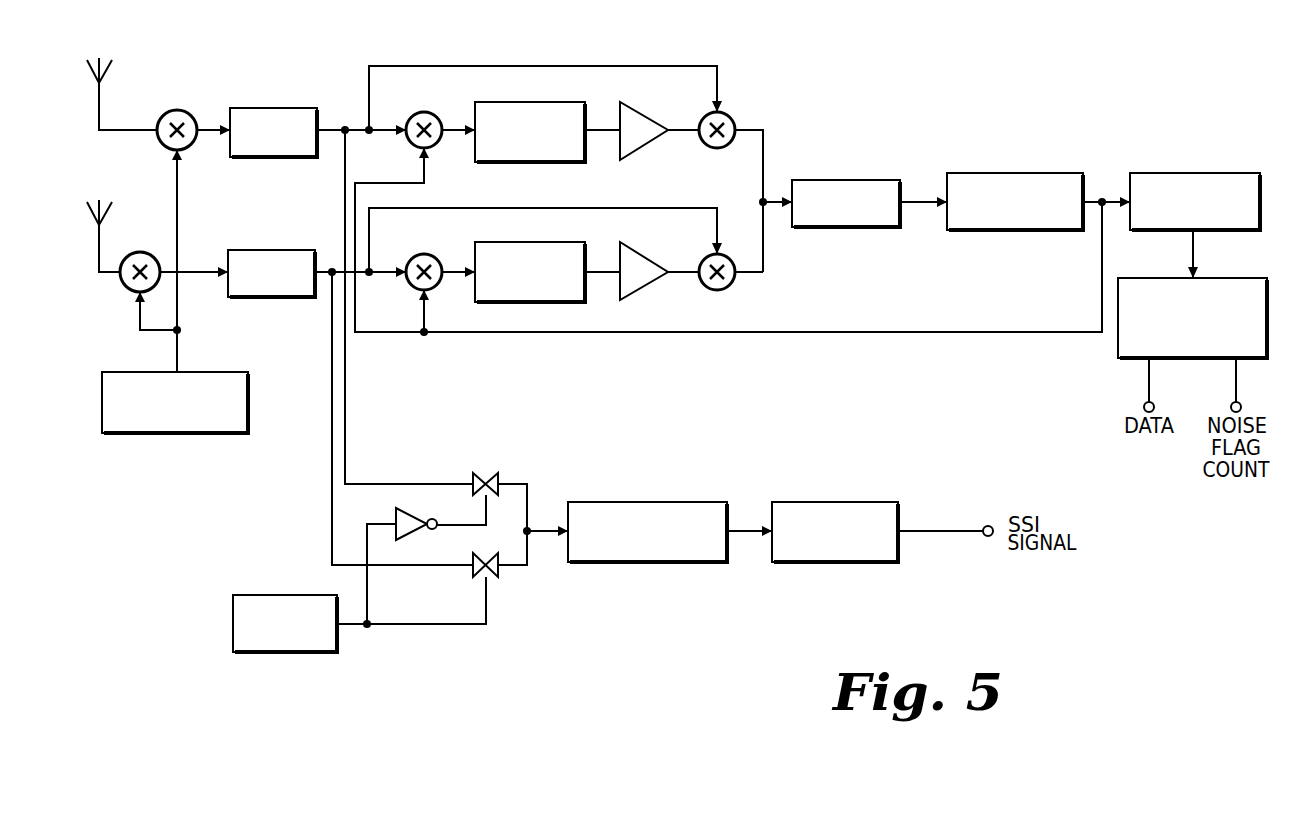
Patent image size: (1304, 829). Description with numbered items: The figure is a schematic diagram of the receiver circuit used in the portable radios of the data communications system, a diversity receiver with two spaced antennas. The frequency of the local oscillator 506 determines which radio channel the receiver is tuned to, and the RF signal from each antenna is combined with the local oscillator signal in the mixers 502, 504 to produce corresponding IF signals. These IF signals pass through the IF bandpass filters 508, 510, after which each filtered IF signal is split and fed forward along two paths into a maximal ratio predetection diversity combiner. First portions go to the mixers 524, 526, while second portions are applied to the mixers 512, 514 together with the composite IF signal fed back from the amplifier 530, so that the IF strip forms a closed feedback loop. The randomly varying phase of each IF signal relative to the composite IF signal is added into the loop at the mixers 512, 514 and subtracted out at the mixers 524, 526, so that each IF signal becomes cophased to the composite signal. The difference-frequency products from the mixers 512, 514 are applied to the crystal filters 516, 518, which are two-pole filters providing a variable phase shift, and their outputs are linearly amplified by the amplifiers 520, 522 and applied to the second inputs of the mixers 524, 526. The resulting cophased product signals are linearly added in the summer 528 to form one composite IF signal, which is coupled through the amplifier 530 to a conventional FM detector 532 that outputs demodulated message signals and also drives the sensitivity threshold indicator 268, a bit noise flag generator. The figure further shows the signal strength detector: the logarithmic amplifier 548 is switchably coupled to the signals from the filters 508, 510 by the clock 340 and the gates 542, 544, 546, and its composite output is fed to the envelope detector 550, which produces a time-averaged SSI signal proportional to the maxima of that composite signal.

The mixer 502 is at (160, 143).
The mixer 504 is at (140, 252).
The local oscillator 506 is at (233, 372).
The IF bandpass filter 508 is at (290, 108).
The IF bandpass filter 510 is at (273, 250).
The mixer 512 is at (424, 112).
The mixer 514 is at (424, 254).
The crystal filter 516 is at (535, 102).
The crystal filter 518 is at (535, 242).
The amplifier 520 is at (641, 91).
The amplifier 522 is at (642, 231).
The mixer 524 is at (733, 118).
The mixer 526 is at (702, 287).
The summer 528 is at (855, 180).
The amplifier 530 is at (1043, 173).
The FM detector 532 is at (1240, 173).
The sensitivity threshold indicator 268 is at (1240, 278).
The clock 340 is at (238, 652).
The gate 542 is at (422, 497).
The gate 544 is at (486, 474).
The gate 546 is at (470, 578).
The logarithmic amplifier 548 is at (703, 502).
The envelope detector 550 is at (870, 502).